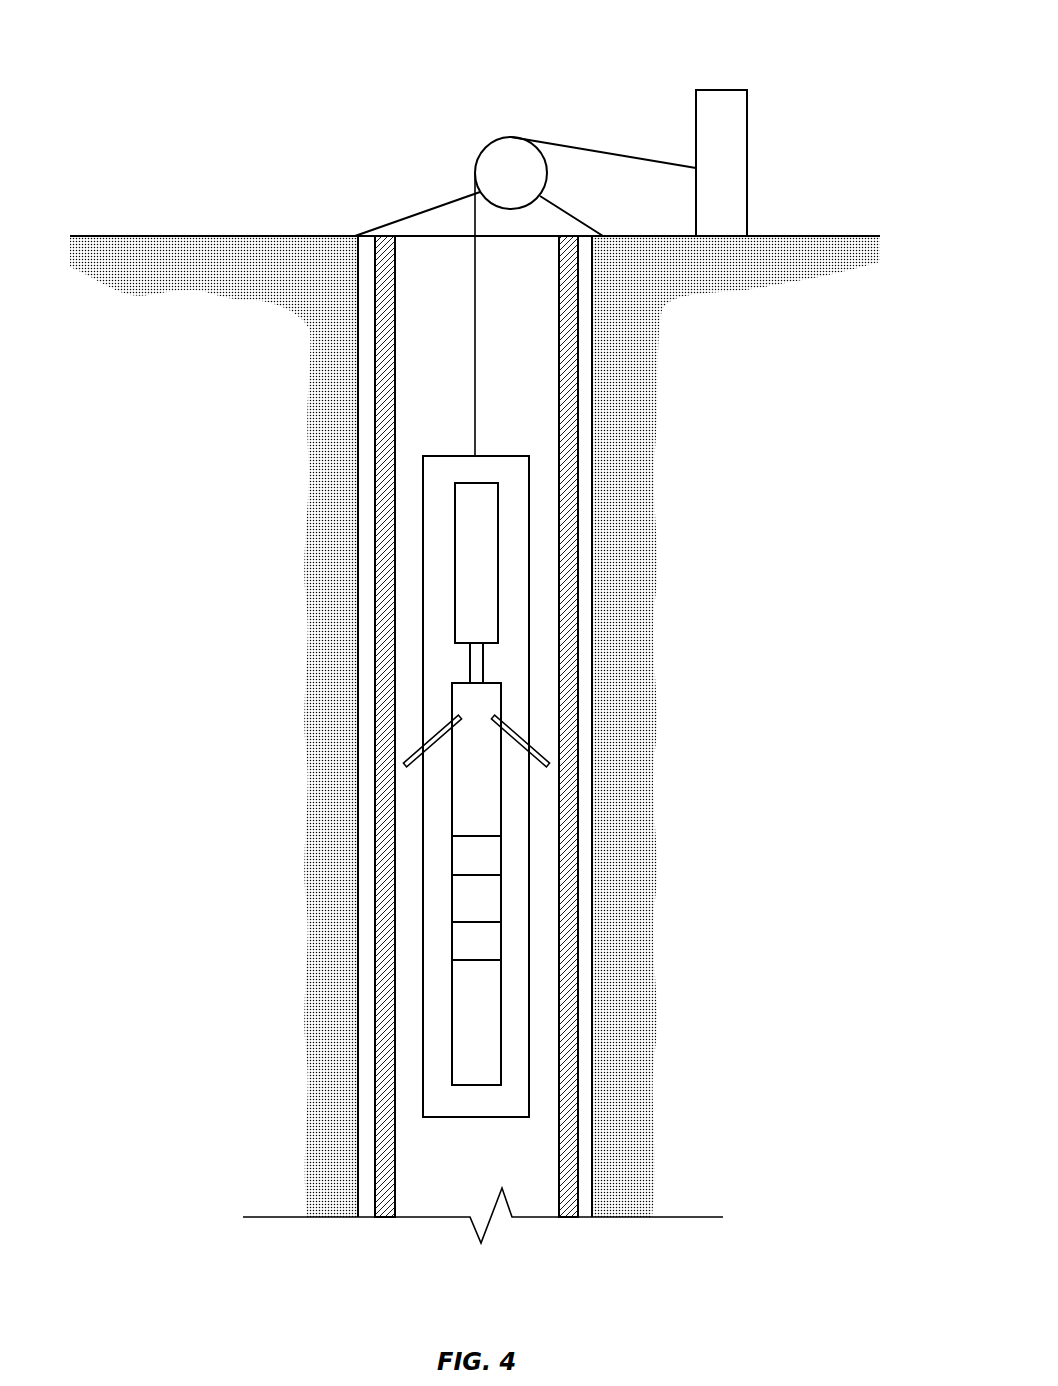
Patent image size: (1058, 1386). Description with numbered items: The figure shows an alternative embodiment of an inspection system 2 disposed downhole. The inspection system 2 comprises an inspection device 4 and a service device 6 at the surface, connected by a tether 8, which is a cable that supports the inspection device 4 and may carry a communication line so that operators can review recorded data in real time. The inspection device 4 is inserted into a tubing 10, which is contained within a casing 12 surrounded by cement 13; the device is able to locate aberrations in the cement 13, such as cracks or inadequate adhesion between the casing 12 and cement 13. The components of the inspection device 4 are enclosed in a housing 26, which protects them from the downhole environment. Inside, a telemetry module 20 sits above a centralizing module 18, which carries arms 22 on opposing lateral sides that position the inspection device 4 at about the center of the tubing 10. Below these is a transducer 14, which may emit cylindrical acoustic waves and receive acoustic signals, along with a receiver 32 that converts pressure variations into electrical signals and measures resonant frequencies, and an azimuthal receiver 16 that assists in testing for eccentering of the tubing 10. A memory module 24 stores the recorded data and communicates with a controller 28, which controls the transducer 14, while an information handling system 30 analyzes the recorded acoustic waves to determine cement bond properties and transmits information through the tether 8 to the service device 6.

The inspection system 2 is at (188, 38).
The inspection device 4 is at (507, 443).
The service device 6 is at (590, 110).
The tether 8 is at (465, 302).
The tubing 10 is at (383, 540).
The casing 12 is at (350, 585).
The cement 13 is at (332, 628).
The transducer 14 is at (468, 795).
The azimuthal receiver 16 is at (480, 942).
The centralizing module 18 is at (508, 678).
The telemetry module 20 is at (508, 540).
The arms 22 is at (438, 733).
The memory module 24 is at (452, 1007).
The housing 26 is at (423, 1107).
The controller 28 is at (501, 998).
The information handling system 30 is at (452, 972).
The receiver 32 is at (480, 857).